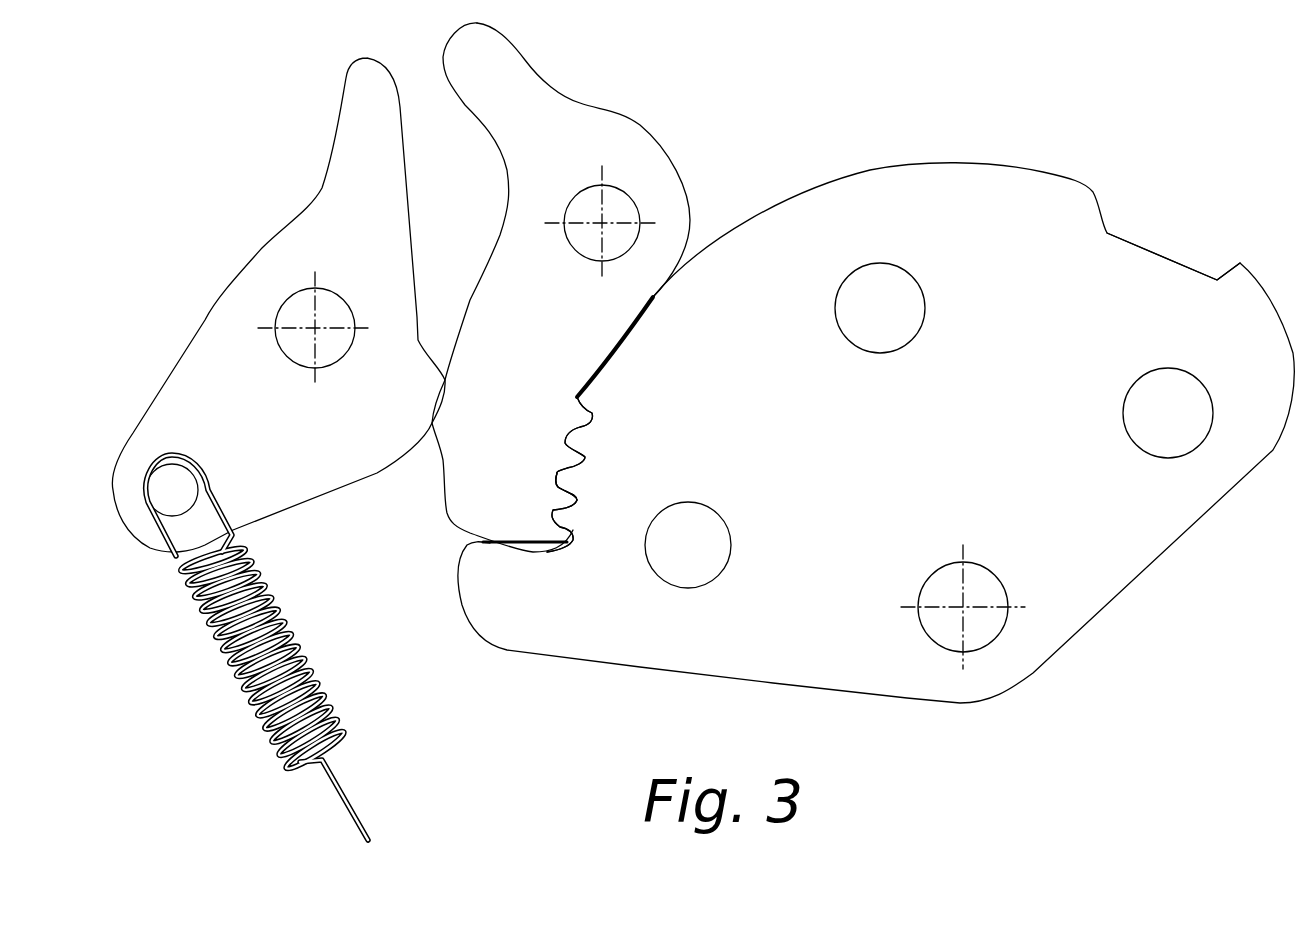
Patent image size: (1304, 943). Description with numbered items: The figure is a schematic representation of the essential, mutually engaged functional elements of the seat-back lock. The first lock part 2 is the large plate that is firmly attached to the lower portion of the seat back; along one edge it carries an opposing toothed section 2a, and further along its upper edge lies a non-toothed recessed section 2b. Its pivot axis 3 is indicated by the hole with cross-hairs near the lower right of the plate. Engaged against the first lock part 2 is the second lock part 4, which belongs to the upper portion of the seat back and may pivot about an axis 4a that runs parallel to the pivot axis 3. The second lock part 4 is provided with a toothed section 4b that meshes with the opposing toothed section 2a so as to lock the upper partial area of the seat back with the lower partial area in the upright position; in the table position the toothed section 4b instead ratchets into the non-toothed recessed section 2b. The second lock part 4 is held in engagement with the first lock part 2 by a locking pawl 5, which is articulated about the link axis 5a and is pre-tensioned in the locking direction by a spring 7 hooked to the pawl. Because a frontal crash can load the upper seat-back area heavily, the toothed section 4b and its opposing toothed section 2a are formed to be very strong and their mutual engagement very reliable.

The first lock part 2 is at (1040, 187).
The opposing toothed section 2a is at (580, 423).
The non-toothed recessed section 2b is at (1167, 247).
The pivot axis 3 is at (963, 607).
The second lock part 4 is at (580, 342).
The axis 4a is at (602, 223).
The toothed section 4b is at (563, 480).
The locking pawl 5 is at (172, 390).
The articulated link axis 5a is at (315, 328).
The spring 7 is at (287, 627).